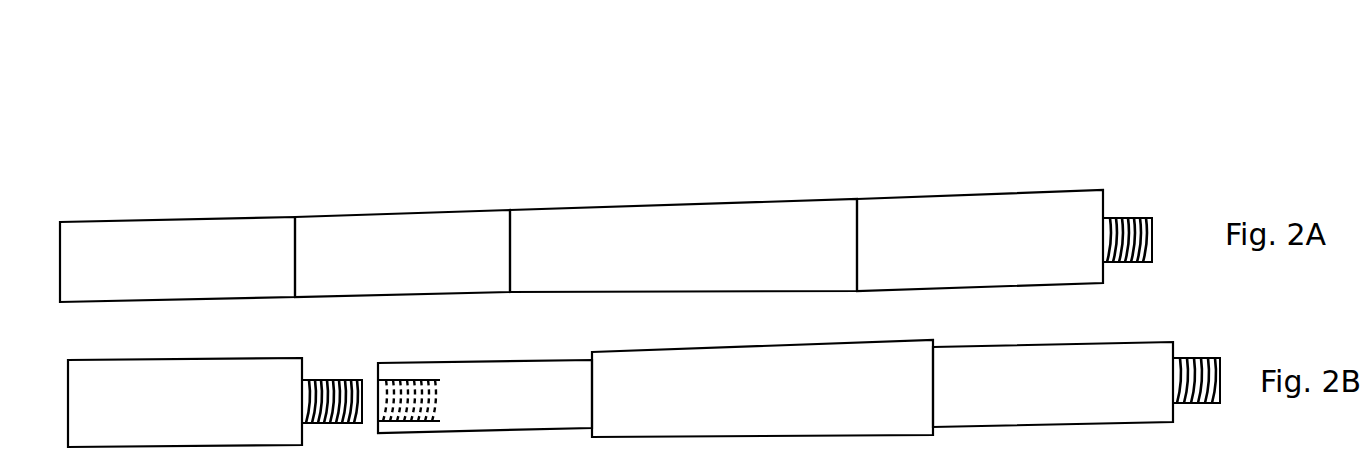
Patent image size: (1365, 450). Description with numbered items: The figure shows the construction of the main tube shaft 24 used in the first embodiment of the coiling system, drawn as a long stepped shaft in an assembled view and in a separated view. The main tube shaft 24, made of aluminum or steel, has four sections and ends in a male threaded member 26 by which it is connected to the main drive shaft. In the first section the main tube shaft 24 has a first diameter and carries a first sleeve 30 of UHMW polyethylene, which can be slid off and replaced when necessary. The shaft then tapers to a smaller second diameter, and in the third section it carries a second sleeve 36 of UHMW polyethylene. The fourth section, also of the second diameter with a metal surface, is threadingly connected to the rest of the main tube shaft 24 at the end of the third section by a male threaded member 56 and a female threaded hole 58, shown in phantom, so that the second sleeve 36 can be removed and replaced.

In FIG. 2A, the main tube shaft 24 is at (726, 122).
In FIG. 2A, the male threaded member 26 is at (1137, 218).
In FIG. 2B, the male threaded member 26 is at (1195, 358).
In FIG. 2A, the first sleeve 30 is at (962, 225).
In FIG. 2A, the second sleeve 36 is at (376, 243).
In FIG. 2B, the male threaded member 56 is at (322, 380).
In FIG. 2B, the female threaded hole 58 is at (405, 380).